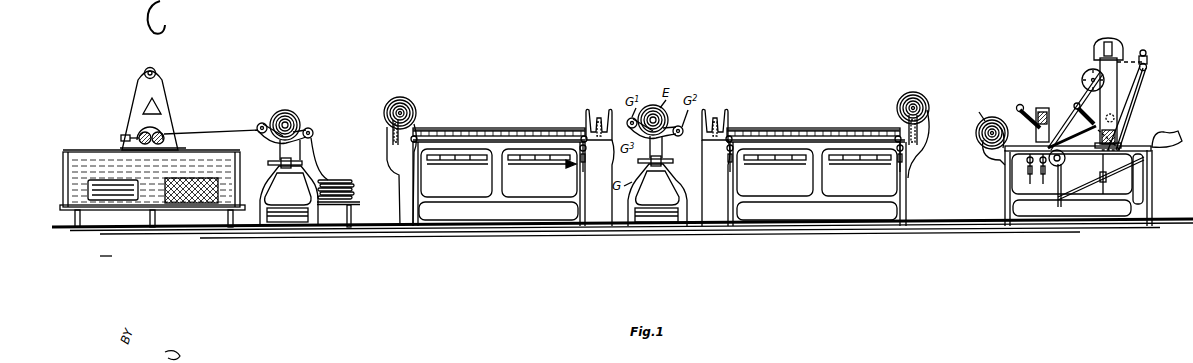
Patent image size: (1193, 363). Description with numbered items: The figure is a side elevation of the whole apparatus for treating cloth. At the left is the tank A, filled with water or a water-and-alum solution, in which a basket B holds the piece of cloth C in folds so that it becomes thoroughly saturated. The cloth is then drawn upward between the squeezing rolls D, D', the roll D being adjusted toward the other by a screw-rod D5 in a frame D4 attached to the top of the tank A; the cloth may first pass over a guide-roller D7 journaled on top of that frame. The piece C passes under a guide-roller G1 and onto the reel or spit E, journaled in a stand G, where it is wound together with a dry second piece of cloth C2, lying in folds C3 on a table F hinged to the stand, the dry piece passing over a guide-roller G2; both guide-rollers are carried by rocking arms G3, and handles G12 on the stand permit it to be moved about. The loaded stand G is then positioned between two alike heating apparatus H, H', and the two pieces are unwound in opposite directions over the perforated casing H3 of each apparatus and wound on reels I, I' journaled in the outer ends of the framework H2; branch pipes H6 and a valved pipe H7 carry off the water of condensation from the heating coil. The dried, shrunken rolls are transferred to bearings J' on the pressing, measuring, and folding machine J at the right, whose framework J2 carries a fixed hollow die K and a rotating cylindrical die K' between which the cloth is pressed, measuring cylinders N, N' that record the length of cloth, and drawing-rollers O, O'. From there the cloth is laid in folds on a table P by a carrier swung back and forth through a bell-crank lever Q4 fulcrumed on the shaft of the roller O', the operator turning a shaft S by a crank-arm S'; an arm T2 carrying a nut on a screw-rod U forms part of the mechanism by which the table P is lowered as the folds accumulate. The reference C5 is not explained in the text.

The tank A is at (80, 154).
The basket B is at (128, 212).
The piece of cloth C is at (130, 182).
The wringer or squeezing roll D is at (138, 124).
The frame D4 is at (168, 106).
The screw-rod D5 is at (124, 135).
The guide-roller D7 is at (168, 62).
The wringer or squeezing roll D' is at (211, 137).
The reel or spit E is at (292, 116).
The stand G is at (290, 204).
The guide-roller G1 is at (262, 122).
The guide-roller G2 is at (313, 131).
The arms G3 is at (278, 141).
The handles G12 is at (674, 161).
The second piece of cloth C2 is at (323, 168).
The folds C3 is at (356, 190).
The web portion C5 is at (730, 128).
The table F is at (361, 205).
The reel or spit I is at (400, 151).
The reel or spit I' is at (922, 125).
The heating apparatus H is at (499, 122).
The framework H2 is at (472, 194).
The casing H3 is at (478, 119).
The branch pipes H6 is at (518, 156).
The pipe H7 is at (526, 166).
The heating apparatus H' is at (816, 158).
The pressing, measuring, and folding machine J is at (1077, 106).
The bearings J' is at (984, 136).
The framework J2 is at (1005, 198).
The die K is at (1022, 113).
The die K' is at (1047, 113).
The measuring-machine cylinder N is at (1088, 101).
The measuring-machine cylinder N' is at (1100, 50).
The drawing-roller O is at (1157, 55).
The drawing-roller O' is at (1159, 73).
The bell-crank lever Q4 is at (1140, 100).
The shaft S is at (1117, 132).
The crank-arm S' is at (1075, 111).
The arm T2 is at (1072, 191).
The screw-rod U is at (1070, 190).
The table P is at (1172, 149).